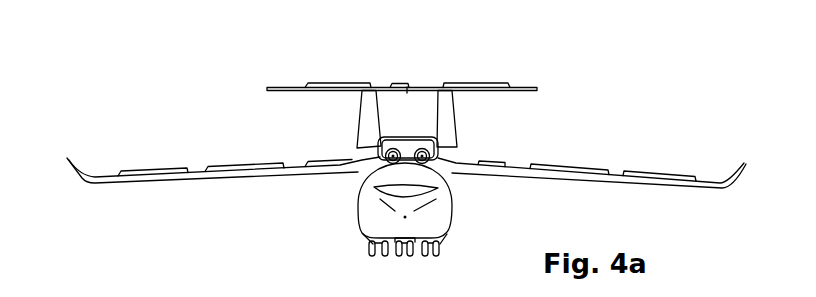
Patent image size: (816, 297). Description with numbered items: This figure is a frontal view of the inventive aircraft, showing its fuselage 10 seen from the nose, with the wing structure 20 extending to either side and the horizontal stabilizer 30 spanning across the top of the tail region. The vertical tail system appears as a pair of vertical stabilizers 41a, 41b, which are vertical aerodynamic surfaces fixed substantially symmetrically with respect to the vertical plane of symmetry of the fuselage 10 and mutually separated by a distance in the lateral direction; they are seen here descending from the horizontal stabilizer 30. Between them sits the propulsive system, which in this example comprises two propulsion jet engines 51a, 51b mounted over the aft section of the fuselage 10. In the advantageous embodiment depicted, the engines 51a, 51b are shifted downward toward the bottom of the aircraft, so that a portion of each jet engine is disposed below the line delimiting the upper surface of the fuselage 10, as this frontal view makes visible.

The fuselage 10 is at (348, 220).
The wing structure 20 is at (153, 187).
The horizontal stabilizer 30 is at (457, 83).
The vertical stabilizer 41a is at (366, 108).
The vertical stabilizer 41b is at (450, 108).
The propulsion jet engine 51a is at (357, 135).
The propulsion jet engine 51b is at (457, 140).